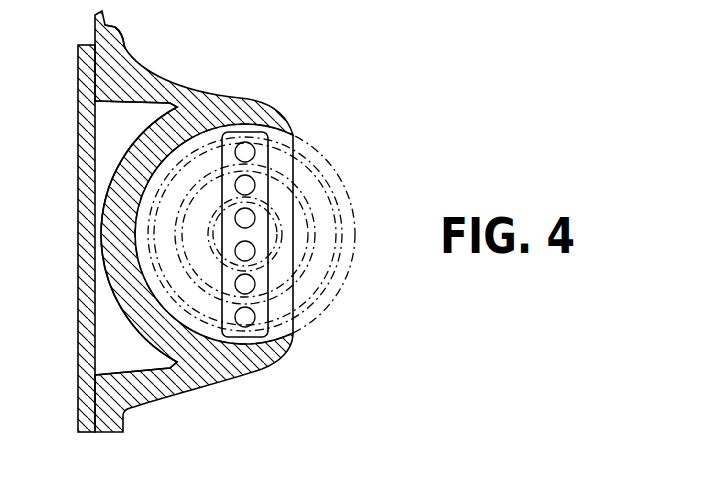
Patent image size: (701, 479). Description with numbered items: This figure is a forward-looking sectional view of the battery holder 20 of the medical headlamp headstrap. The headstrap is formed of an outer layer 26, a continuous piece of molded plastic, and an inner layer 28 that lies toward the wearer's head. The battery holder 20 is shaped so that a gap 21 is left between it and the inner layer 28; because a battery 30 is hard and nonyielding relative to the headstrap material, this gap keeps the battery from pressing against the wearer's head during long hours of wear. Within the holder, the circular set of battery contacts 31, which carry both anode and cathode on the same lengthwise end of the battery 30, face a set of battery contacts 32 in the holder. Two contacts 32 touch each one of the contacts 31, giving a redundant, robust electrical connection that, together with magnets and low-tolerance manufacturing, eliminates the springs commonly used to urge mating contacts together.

The battery holder 20 is at (255, 97).
The gap 21 is at (110, 131).
The outer layer 26 is at (123, 45).
The inner layer 28 is at (77, 68).
The battery 30 is at (332, 166).
The battery contacts 31 is at (342, 198).
The battery contacts 32 is at (254, 152).